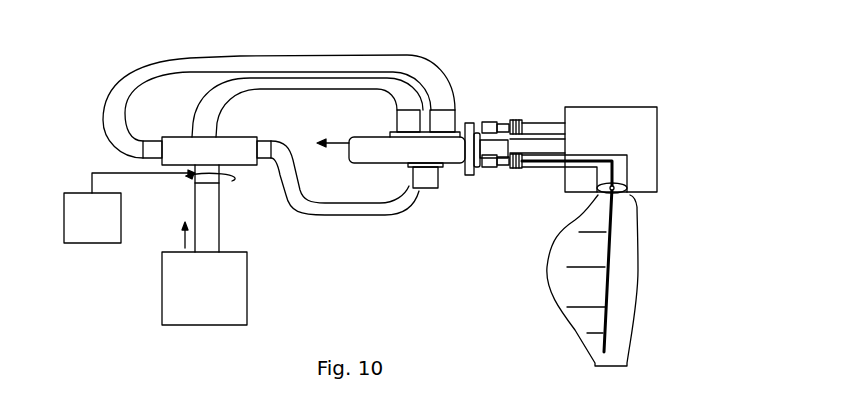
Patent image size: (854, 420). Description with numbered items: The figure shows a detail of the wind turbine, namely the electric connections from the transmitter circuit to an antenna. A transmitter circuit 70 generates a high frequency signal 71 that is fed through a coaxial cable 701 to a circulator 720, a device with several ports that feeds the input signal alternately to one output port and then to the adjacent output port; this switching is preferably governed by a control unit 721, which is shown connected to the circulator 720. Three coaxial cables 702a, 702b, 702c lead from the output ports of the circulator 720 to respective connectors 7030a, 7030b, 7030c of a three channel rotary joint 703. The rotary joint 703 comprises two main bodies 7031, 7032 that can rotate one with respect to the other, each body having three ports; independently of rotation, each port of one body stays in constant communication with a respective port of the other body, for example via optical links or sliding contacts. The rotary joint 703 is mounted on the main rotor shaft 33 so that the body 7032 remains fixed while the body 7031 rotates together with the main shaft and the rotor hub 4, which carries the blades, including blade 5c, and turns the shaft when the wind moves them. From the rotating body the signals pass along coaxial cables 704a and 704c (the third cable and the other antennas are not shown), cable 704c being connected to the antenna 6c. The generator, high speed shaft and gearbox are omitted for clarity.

The rotor hub 4 is at (632, 115).
The blade 5c is at (622, 273).
The antenna 6c is at (605, 327).
The main rotor shaft 33 is at (318, 149).
The transmitter circuit 70 is at (172, 287).
The high frequency signal 71 is at (167, 235).
The coaxial cable 701 is at (228, 250).
The coaxial cable 702a is at (115, 85).
The coaxial cable 702b is at (207, 118).
The coaxial cable 702c is at (385, 212).
The three channel rotary joint 703 is at (384, 156).
The coaxial cable 704a is at (538, 128).
The coaxial cable 704c is at (561, 166).
The circulator 720 is at (207, 151).
The control unit 721 is at (129, 206).
The connector 7030a is at (407, 123).
The connector 7030b is at (445, 118).
The connector 7030c is at (432, 183).
The rotary joint body 7031 is at (482, 169).
The rotary joint body 7032 is at (403, 155).